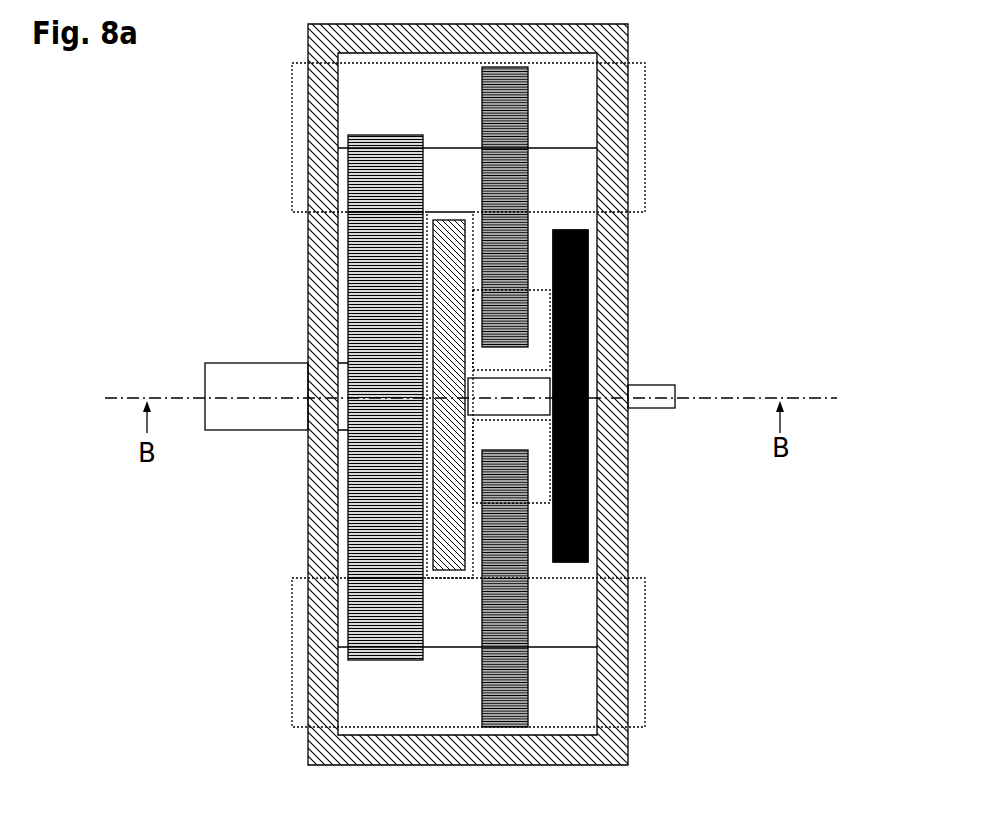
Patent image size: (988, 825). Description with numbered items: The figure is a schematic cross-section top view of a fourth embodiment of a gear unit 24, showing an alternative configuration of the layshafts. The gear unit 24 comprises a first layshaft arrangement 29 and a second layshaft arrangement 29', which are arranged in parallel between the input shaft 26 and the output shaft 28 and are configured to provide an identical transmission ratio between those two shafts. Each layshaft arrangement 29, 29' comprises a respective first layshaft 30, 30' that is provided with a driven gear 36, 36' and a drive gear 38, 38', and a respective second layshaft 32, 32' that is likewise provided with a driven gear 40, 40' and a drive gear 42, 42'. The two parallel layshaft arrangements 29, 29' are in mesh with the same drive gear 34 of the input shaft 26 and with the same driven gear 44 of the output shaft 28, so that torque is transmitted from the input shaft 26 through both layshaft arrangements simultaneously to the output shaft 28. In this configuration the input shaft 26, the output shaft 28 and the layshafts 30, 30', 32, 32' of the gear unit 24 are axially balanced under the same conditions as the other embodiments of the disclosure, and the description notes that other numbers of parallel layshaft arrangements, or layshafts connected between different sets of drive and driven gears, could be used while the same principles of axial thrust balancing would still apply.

The gear unit 24 is at (722, 62).
The input shaft 26 is at (212, 362).
The output shaft 28 is at (660, 388).
The first layshaft arrangement 29 is at (522, 673).
The second layshaft arrangement 29' is at (525, 137).
The first layshaft 30 is at (467, 674).
The first layshaft 30' is at (467, 126).
The second layshaft 32 is at (649, 480).
The second layshaft 32' is at (662, 314).
The drive gear 34 is at (358, 300).
The driven gear 36 is at (385, 653).
The driven gear 36' is at (320, 153).
The drive gear 38 is at (618, 588).
The drive gear 38' is at (539, 207).
The driven gear 40 is at (594, 514).
The driven gear 40' is at (373, 395).
The drive gear 42 is at (649, 480).
The drive gear 42' is at (650, 297).
The driven gear 44 is at (590, 397).